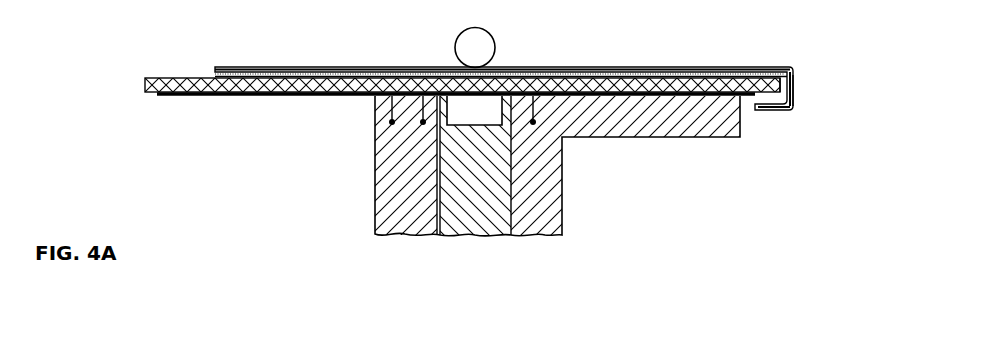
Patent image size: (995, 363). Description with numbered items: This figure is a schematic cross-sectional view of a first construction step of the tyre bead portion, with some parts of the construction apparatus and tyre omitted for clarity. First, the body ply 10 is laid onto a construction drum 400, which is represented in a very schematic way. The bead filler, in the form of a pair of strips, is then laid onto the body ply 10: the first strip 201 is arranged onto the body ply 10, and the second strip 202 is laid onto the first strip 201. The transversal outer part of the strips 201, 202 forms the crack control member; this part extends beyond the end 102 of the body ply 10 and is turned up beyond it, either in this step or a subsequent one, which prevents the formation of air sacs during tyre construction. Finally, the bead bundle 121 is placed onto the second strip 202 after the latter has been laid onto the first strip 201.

The body ply 10 is at (147, 82).
The end of body ply 102 is at (794, 78).
The bead bundle 121 is at (495, 42).
The first strip 201 is at (213, 74).
The second strip 202 is at (217, 68).
The construction drum 400 is at (508, 259).